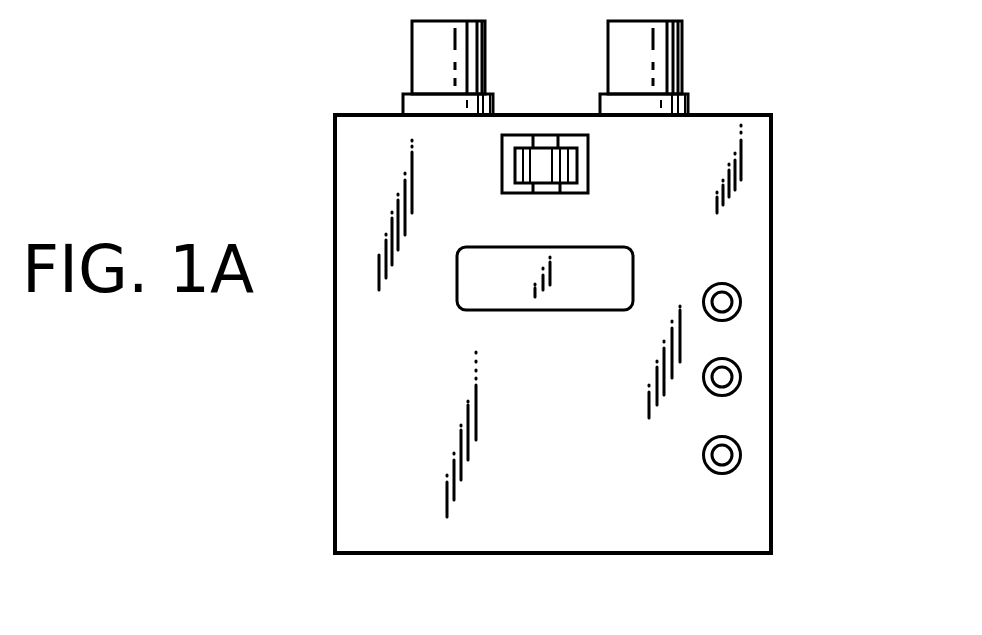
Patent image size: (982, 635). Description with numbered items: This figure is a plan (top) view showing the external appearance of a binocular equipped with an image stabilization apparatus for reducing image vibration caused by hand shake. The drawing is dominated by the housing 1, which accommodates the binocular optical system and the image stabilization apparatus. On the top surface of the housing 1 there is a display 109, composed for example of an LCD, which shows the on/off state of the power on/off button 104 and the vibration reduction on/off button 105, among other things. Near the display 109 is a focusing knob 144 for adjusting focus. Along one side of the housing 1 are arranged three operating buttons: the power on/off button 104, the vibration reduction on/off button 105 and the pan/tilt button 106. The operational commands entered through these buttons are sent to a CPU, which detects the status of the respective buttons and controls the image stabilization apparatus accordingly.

The housing 1 is at (357, 338).
The focusing knob 144 is at (548, 135).
The display 109 is at (600, 272).
The pan/tilt button 106 is at (741, 298).
The vibration reduction on/off button 105 is at (741, 373).
The power on/off button 104 is at (741, 450).